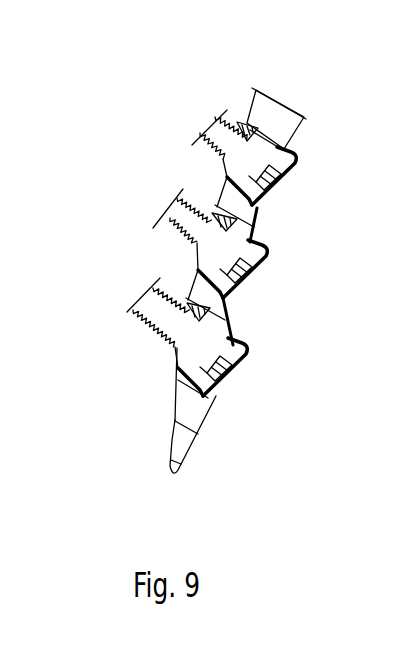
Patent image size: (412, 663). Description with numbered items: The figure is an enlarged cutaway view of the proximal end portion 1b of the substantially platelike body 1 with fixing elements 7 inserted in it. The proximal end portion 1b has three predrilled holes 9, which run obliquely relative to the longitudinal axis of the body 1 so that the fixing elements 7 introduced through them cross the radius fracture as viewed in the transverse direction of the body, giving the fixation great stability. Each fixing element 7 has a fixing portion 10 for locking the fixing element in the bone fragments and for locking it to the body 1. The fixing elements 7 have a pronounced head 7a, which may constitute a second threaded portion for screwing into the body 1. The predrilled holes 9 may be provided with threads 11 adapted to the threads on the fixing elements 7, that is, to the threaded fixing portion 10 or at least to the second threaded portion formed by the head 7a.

The body 1 is at (166, 394).
The proximal end portion 1b is at (186, 441).
The fixing element 7 is at (127, 280).
The head 7a is at (264, 182).
The predrilled hole 9 is at (238, 298).
The fixing portion 10 is at (133, 323).
The threads 11 is at (243, 125).